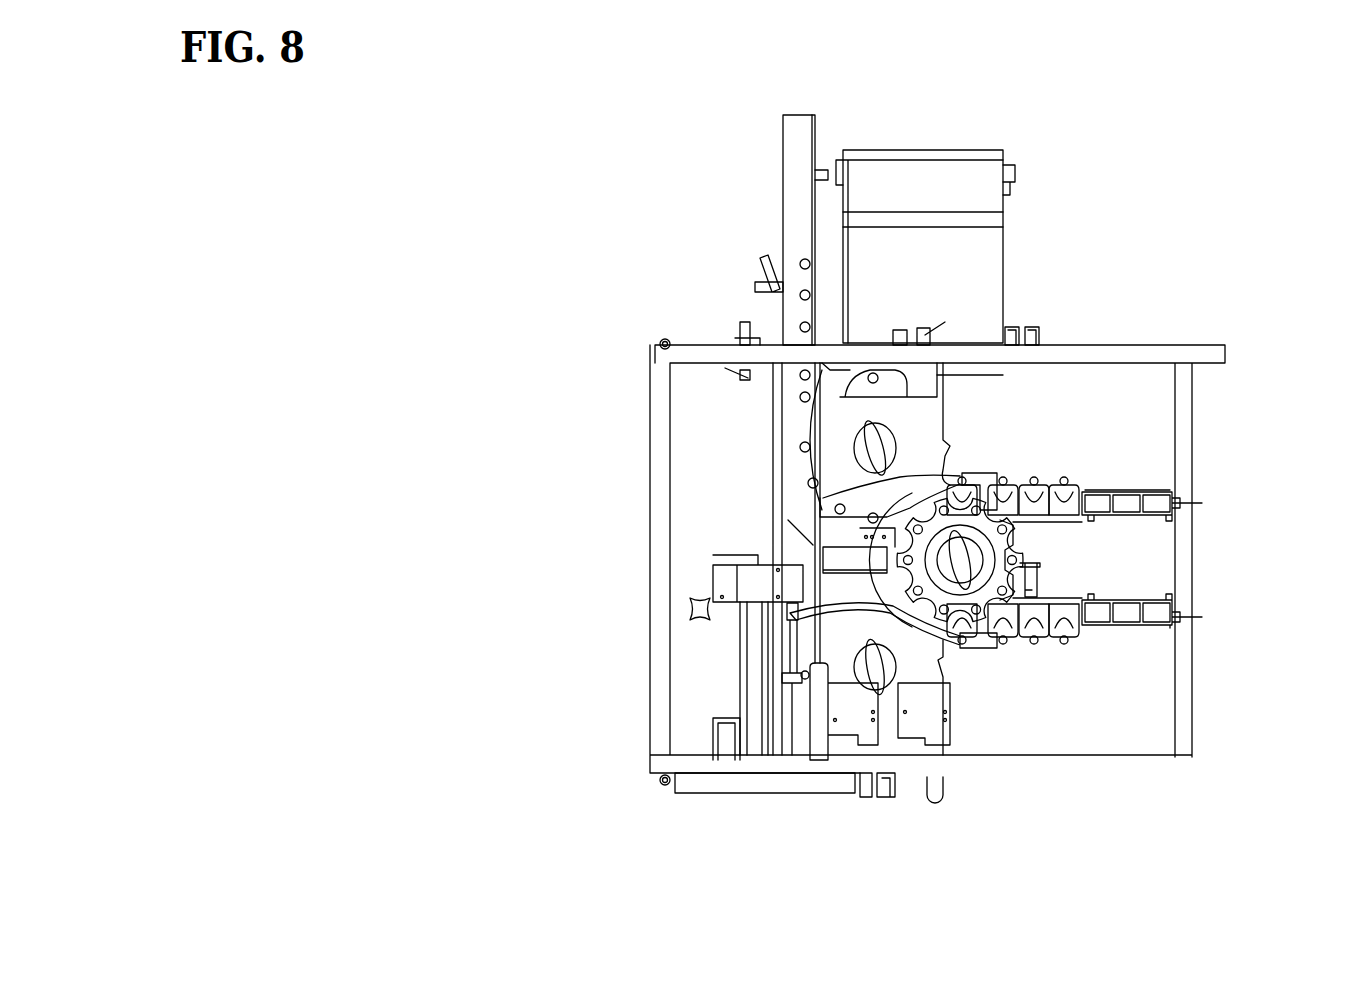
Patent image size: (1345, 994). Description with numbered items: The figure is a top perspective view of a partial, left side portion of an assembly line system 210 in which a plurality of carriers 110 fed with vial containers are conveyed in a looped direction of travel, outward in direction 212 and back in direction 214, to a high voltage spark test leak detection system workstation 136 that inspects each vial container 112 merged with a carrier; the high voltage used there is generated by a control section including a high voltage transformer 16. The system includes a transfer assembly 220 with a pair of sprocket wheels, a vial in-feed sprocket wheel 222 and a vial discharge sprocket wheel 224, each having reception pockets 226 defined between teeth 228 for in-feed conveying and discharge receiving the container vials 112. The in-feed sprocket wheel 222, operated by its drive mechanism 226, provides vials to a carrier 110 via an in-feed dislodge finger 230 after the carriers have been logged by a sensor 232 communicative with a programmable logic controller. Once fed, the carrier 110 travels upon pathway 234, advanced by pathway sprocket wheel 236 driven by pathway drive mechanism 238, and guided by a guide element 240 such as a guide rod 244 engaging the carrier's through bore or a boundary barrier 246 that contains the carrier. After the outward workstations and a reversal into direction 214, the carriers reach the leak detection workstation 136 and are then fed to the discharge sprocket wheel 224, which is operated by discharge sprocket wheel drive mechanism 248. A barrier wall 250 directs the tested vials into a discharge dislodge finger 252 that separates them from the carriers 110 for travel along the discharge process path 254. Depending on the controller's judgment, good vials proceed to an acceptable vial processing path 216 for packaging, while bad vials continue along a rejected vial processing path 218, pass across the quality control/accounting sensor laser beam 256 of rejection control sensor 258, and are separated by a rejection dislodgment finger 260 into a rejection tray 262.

The high voltage transformer 16 is at (1300, 349).
The carriers 110 is at (1005, 488).
The vial container 112 is at (1152, 498).
The high voltage spark test leak detection system workstation 136 is at (1138, 490).
The assembly line system 210 is at (635, 377).
The outward direction of travel 212 is at (1152, 590).
The return direction of travel 214 is at (1048, 535).
The acceptable vial processing path 216 is at (805, 385).
The rejected vial processing path 218 is at (833, 386).
The transfer assembly 220 is at (920, 416).
The vial in-feed sprocket wheel 222 is at (922, 663).
The vial discharge sprocket wheel 224 is at (925, 433).
The reception pockets 226 is at (813, 412).
The teeth 228 is at (804, 431).
The in-feed dislodge finger 230 is at (897, 618).
The sensor 232 is at (1028, 587).
The pathway 234 is at (1164, 672).
The pathway sprocket wheel 236 is at (1013, 543).
The pathway drive mechanism 238 is at (963, 565).
The guide element 240 is at (1026, 670).
The guide rod 244 is at (985, 640).
The boundary barrier 246 is at (978, 642).
The discharge sprocket wheel drive mechanism 248 is at (873, 448).
The barrier wall 250 is at (986, 480).
The discharge dislodge finger 252 is at (910, 508).
The process path 254 is at (892, 512).
The quality control/accounting sensor laser beam 256 is at (833, 386).
The rejection control sensor 258 is at (862, 326).
The rejection dislodgment finger 260 is at (880, 388).
The rejection tray 262 is at (945, 278).